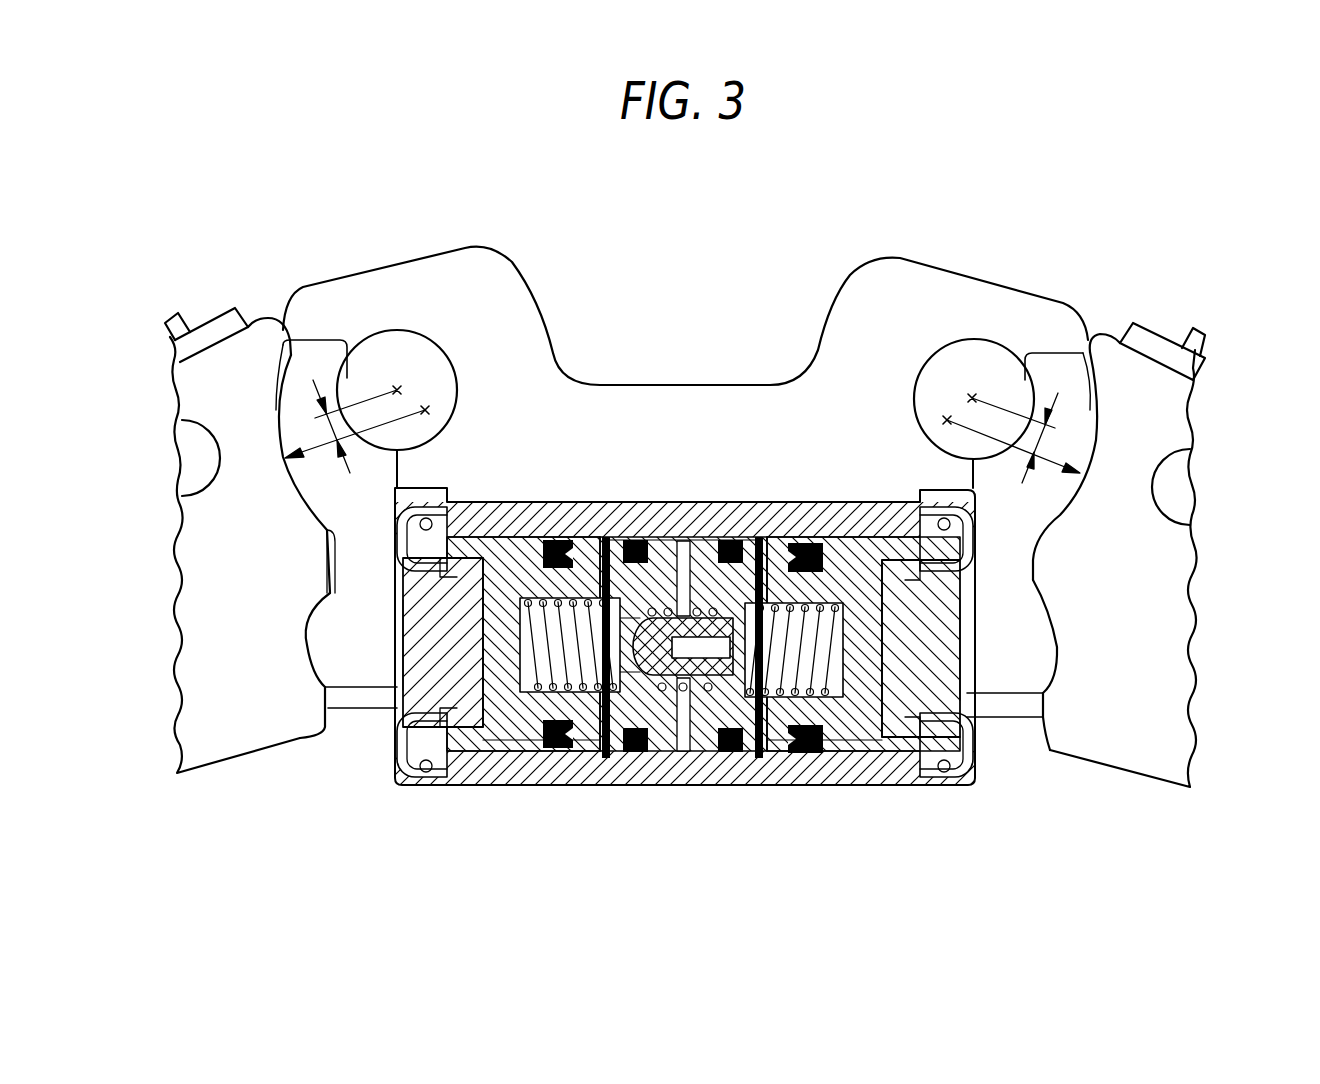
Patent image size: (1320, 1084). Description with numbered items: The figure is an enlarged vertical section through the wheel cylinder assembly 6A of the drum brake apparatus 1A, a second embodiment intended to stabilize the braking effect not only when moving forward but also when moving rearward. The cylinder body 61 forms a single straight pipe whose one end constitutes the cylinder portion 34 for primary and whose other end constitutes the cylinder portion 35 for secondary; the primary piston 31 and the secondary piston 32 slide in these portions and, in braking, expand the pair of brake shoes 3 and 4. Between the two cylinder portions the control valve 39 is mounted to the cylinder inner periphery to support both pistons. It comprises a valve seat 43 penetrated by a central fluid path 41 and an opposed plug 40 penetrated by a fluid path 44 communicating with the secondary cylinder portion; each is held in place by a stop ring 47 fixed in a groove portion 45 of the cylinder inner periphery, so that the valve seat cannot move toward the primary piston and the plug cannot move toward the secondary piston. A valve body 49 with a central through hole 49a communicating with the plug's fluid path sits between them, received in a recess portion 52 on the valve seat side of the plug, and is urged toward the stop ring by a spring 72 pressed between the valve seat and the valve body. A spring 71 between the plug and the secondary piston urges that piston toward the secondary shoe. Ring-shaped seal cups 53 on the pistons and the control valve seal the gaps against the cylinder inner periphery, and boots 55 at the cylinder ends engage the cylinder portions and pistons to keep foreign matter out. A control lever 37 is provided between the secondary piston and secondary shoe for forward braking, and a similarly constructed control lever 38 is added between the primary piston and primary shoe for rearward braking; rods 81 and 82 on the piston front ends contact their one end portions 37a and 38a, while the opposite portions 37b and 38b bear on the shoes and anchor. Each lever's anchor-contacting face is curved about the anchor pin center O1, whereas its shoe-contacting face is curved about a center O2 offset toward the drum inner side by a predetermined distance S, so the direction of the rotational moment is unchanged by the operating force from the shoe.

The drum brake apparatus 1A is at (962, 265).
The primary shoe 3 is at (205, 738).
The secondary shoe 4 is at (1150, 582).
The wheel cylinder assembly 6A is at (608, 500).
The primary piston 31 is at (400, 697).
The secondary piston 32 is at (870, 753).
The cylinder portion for primary 34 is at (455, 488).
The cylinder portion for secondary 35 is at (778, 493).
The control lever 37 is at (1047, 372).
The one end portion of control lever 37a is at (1040, 647).
The outer arm contact portion 37b is at (1080, 388).
The control lever 38 is at (293, 373).
The one end portion of control lever 38a is at (333, 623).
The inner arm contact portion 38b is at (280, 410).
The control valve 39 is at (690, 762).
The plug 40 is at (745, 535).
The fluid path 41 is at (583, 753).
The valve seat 43 is at (620, 753).
The fluid path 44 is at (752, 753).
The groove portion 45 is at (648, 535).
The stop ring 47 is at (615, 535).
The valve body 49 is at (712, 753).
The through hole 49a is at (657, 752).
The recess portion 52 is at (695, 535).
The seal cup 53 is at (728, 535).
The boot 55 is at (397, 763).
The cylinder body 61 is at (645, 420).
The spring 71 is at (498, 750).
The spring 72 is at (672, 537).
The rod 81 is at (410, 650).
The rod 82 is at (960, 647).
The center of anchor pin O1 is at (397, 390).
The center of curvature O2 is at (425, 410).
The predetermined distance S is at (340, 425).